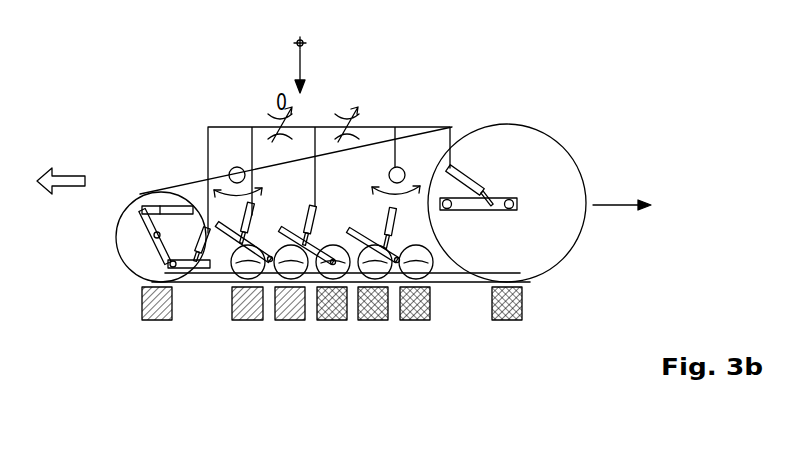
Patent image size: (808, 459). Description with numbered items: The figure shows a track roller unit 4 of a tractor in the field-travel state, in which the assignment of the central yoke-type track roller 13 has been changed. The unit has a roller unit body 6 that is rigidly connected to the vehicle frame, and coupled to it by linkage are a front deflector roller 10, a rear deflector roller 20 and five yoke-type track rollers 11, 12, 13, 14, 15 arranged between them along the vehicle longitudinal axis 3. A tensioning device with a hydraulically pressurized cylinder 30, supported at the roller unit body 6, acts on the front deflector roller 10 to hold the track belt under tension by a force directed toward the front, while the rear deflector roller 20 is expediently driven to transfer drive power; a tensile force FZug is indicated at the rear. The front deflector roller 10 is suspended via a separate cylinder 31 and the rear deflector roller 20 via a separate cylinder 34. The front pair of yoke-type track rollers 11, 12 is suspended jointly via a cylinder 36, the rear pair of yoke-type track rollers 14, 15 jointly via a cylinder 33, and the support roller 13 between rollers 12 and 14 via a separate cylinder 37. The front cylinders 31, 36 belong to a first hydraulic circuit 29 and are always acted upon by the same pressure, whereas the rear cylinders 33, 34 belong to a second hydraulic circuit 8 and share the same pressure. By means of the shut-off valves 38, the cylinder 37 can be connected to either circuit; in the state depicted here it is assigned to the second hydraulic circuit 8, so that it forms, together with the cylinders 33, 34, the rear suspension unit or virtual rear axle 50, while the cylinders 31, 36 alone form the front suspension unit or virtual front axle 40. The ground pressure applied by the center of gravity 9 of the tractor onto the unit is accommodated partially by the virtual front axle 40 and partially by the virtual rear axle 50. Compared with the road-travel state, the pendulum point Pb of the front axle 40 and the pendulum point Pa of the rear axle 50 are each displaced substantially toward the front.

The vehicle longitudinal axis 3 is at (67, 173).
The track roller unit 4 is at (563, 124).
The roller unit body 6 is at (349, 194).
The second hydraulic circuit 8 is at (387, 127).
The center of gravity 9 is at (305, 42).
The front deflector roller 10 is at (132, 248).
The yoke-type track roller 11 is at (229, 283).
The yoke-type track roller 12 is at (271, 283).
The central yoke-type track roller 13 is at (349, 282).
The yoke-type track roller 14 is at (381, 270).
The yoke-type track roller 15 is at (421, 271).
The rear deflector roller 20 is at (563, 240).
The first hydraulic circuit 29 is at (210, 125).
The cylinder 30 is at (173, 210).
The cylinder 31 is at (203, 230).
The cylinder 33 is at (397, 223).
The cylinder 34 is at (462, 170).
The cylinder 36 is at (250, 205).
The cylinder 37 is at (310, 208).
The shut-off valve 38 is at (282, 82).
The virtual front axle 40 is at (303, 343).
The virtual rear axle 50 is at (525, 343).
The pendulum point Pa is at (398, 167).
The pendulum point Pb is at (237, 167).
The tensile force FZug is at (620, 203).